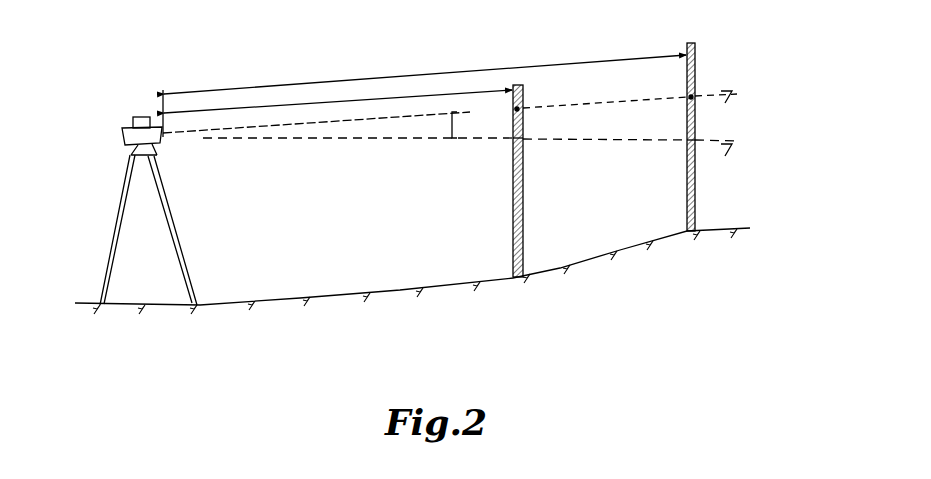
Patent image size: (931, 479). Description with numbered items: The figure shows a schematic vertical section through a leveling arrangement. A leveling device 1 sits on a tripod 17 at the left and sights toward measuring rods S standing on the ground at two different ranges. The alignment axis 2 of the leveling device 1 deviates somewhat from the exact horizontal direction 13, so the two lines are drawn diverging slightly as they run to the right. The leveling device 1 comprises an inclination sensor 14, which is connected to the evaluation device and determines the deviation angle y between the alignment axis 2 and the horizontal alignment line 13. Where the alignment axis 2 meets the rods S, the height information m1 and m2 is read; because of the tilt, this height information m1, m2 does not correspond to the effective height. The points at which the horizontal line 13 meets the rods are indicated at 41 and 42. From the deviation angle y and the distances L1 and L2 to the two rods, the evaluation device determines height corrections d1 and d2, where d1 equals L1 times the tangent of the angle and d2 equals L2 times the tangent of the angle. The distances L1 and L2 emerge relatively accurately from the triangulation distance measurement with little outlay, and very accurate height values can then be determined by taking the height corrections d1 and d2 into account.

The leveling device 1 is at (131, 182).
The inclination sensor 14 is at (138, 114).
The tripod 17 is at (118, 214).
The staff S is at (512, 210).
The distance L1 is at (297, 104).
The distance L2 is at (548, 65).
The alignment axis 2 is at (737, 100).
The horizontal direction 13 is at (730, 145).
The height information m1 is at (512, 109).
The height information m2 is at (684, 97).
The deviation angle y is at (447, 125).
The height correction d1 is at (511, 117).
The height correction d2 is at (685, 117).
The first staff reading point 41 is at (511, 143).
The second staff reading point 42 is at (685, 136).